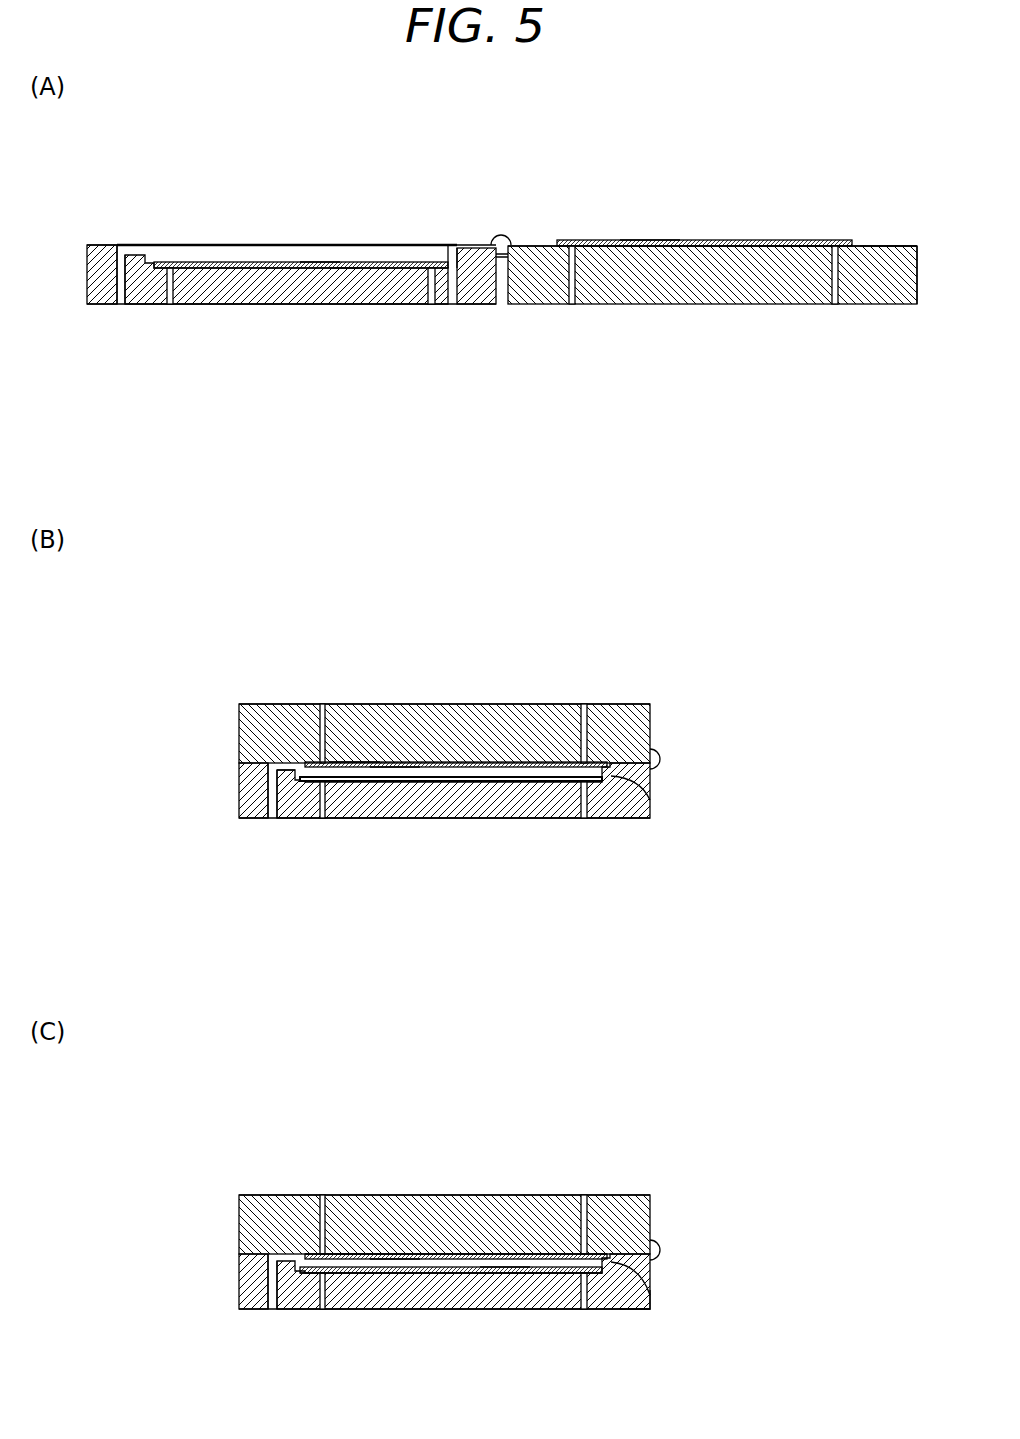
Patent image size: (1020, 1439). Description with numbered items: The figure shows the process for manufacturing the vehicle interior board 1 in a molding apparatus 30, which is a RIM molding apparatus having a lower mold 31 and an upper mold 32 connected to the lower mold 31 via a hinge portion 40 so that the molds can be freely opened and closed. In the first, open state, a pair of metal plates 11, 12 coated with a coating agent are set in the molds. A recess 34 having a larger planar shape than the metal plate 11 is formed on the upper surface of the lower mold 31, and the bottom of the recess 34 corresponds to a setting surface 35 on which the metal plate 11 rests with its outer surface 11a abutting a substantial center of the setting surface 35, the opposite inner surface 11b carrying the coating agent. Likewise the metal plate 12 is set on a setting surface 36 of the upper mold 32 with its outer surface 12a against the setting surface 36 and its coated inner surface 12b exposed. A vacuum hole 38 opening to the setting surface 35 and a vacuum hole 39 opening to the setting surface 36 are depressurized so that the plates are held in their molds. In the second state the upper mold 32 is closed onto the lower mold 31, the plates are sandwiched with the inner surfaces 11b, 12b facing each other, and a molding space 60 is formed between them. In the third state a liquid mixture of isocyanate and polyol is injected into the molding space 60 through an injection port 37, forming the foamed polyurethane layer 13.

The vehicle interior board 1 is at (480, 1254).
The metal plate 11 is at (375, 262).
The outer surface of the metal plate 11a is at (345, 268).
The inner surface of the metal plate 11b is at (320, 262).
The metal plate 12 is at (712, 241).
The outer surface of the metal plate 12a is at (805, 247).
The inner surface of the metal plate 12b is at (648, 240).
The foamed polyurethane layer 13 is at (650, 1303).
The molding apparatus 30 is at (828, 127).
The lower mold 31 is at (288, 305).
The upper mold 32 is at (700, 305).
The recess 34 is at (238, 245).
The setting surface 35 is at (452, 256).
The setting surface 36 is at (858, 246).
The injection port 37 is at (120, 245).
The vacuum hole 38 is at (170, 305).
The vacuum hole 39 is at (569, 258).
The hinge portion 40 is at (497, 235).
The molding space 60 is at (651, 795).